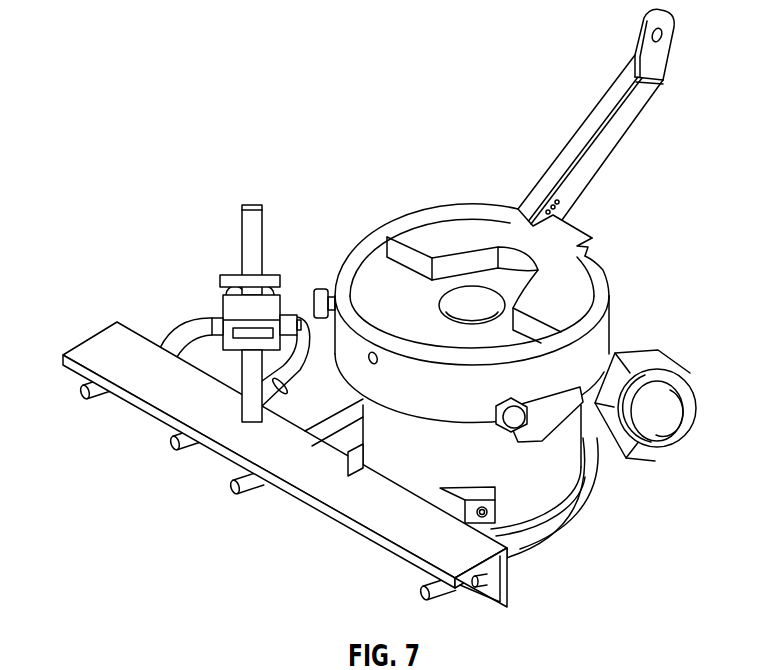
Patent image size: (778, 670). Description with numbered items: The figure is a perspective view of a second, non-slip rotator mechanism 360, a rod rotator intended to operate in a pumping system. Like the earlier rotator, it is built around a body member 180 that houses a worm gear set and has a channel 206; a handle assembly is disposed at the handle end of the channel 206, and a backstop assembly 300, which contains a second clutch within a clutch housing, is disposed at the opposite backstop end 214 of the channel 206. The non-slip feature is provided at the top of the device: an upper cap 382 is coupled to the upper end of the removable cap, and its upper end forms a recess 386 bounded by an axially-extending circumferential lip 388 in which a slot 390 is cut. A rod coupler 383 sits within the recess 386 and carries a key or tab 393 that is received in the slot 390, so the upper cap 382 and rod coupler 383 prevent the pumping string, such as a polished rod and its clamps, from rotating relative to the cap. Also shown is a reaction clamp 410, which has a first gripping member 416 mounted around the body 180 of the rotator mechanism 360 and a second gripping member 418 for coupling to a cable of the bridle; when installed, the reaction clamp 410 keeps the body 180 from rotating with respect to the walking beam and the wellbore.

The non-slip rotator mechanism 360 is at (203, 168).
The circumferential lip 388 is at (427, 214).
The rod coupler 383 is at (462, 238).
The upper cap 382 is at (388, 256).
The recess 386 is at (380, 287).
The tab 393 is at (569, 224).
The slot 390 is at (593, 244).
The channel 206 is at (611, 338).
The backstop end 214 is at (633, 349).
The backstop assembly 300 is at (662, 402).
The body member 180 is at (567, 481).
The first gripping member 416 is at (540, 531).
The reaction clamp 410 is at (100, 346).
The second gripping member 418 is at (184, 333).